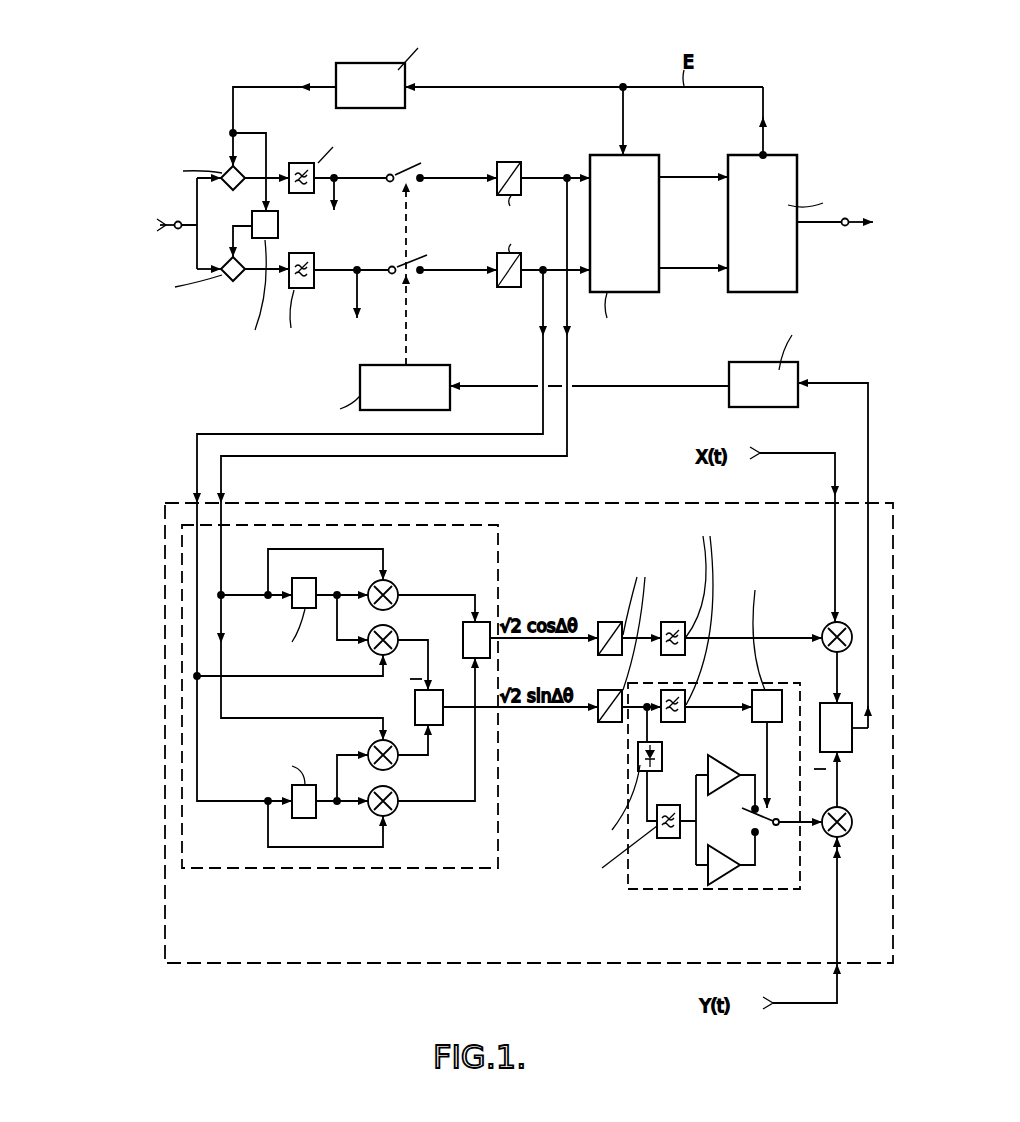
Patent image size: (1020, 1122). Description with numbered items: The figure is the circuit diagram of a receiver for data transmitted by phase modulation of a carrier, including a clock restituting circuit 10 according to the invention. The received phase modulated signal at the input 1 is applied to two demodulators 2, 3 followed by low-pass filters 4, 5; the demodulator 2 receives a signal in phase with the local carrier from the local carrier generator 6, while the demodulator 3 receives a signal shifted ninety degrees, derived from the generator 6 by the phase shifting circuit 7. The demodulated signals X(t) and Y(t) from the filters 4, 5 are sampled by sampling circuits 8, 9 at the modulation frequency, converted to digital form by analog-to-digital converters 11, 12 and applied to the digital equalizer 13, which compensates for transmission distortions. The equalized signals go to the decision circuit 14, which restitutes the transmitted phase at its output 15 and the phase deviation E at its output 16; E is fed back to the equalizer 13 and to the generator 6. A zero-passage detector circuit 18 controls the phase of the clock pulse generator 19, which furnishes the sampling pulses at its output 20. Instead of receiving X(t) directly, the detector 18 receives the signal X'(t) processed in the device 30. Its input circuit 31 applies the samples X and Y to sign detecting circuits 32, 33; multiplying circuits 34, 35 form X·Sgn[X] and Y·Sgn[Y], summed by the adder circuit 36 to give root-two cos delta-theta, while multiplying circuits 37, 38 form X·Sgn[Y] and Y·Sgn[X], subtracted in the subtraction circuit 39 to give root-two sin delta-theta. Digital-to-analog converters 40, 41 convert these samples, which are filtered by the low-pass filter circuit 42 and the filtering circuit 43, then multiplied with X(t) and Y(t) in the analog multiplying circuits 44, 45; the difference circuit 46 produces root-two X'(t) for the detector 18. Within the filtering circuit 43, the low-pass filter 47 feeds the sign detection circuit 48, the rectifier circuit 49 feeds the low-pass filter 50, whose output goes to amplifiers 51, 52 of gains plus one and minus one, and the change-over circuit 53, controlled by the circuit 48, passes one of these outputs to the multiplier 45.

The input 1 is at (180, 219).
The demodulator 2 is at (226, 171).
The demodulator 3 is at (228, 280).
The low-pass filter 4 is at (300, 163).
The low-pass filter 5 is at (299, 288).
The local carrier generator 6 is at (380, 70).
The phase shifting circuit 7 is at (280, 226).
The sampling circuit 8 is at (405, 165).
The sampling circuit 9 is at (409, 258).
The clock restituting circuit 10 is at (624, 457).
The analog-to-digital converter 11 is at (506, 162).
The analog-to-digital converter 12 is at (510, 288).
The equalizer 13 is at (607, 164).
The decision circuit 14 is at (788, 190).
The output 15 is at (844, 226).
The output 16 is at (768, 153).
The zero-passage detector circuit 18 is at (753, 370).
The clock pulse generator 19 is at (442, 376).
The output 20 is at (408, 356).
The device 30 is at (498, 964).
The input circuit 31 is at (500, 530).
The sign detecting circuit 32 is at (303, 588).
The sign detecting circuit 33 is at (308, 807).
The multiplying circuit 34 is at (390, 584).
The multiplying circuit 35 is at (391, 812).
The adder circuit 36 is at (463, 632).
The multiplying circuit 37 is at (396, 764).
The multiplying circuit 38 is at (393, 630).
The subtraction circuit 39 is at (415, 701).
The digital-to-analog converter 40 is at (612, 621).
The digital-to-analog converter 41 is at (605, 724).
The low-pass filter circuit 42 is at (670, 622).
The filtering circuit 43 is at (712, 683).
The analog multiplying circuit 44 is at (827, 623).
The analog multiplying circuit 45 is at (848, 834).
The difference circuit 46 is at (847, 750).
The low-pass filter 47 is at (684, 712).
The sign detection circuit 48 is at (768, 690).
The rectifier circuit 49 is at (647, 770).
The low-pass filter 50 is at (662, 838).
The amplifier 51 is at (733, 768).
The amplifier 52 is at (723, 888).
The change-over circuit 53 is at (767, 828).